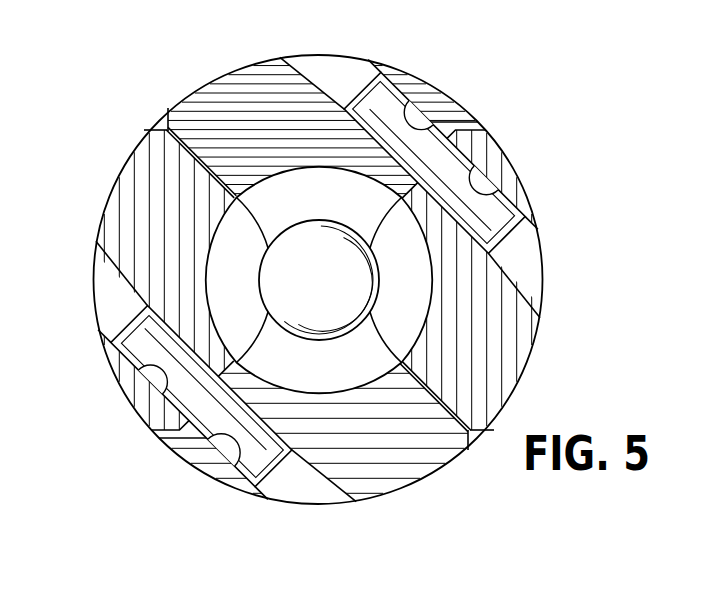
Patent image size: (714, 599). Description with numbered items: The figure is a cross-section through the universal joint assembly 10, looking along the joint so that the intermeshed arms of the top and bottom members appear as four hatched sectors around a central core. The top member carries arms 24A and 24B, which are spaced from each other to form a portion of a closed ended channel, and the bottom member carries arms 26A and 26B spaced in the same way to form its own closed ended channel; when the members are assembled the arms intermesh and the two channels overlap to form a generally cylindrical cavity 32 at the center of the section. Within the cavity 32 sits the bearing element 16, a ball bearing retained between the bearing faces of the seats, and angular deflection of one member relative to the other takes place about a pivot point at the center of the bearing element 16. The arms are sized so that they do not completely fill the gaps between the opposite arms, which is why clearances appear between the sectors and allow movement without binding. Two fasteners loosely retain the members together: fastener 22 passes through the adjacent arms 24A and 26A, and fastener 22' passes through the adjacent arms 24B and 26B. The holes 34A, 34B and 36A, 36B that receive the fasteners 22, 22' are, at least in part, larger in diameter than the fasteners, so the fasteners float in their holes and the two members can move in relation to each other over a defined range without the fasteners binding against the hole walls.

The universal joint assembly 10 is at (464, 77).
The bearing element 16 is at (330, 291).
The fastener 22 is at (176, 396).
The fastener 22' is at (463, 162).
The arm 24A is at (106, 207).
The arm 24B is at (528, 366).
The arm 26A is at (428, 481).
The arm 26B is at (228, 78).
The cylindrical cavity 32 is at (299, 195).
The hole 34A is at (145, 378).
The hole 34B is at (501, 193).
The hole 36A is at (410, 102).
The hole 36B is at (235, 466).